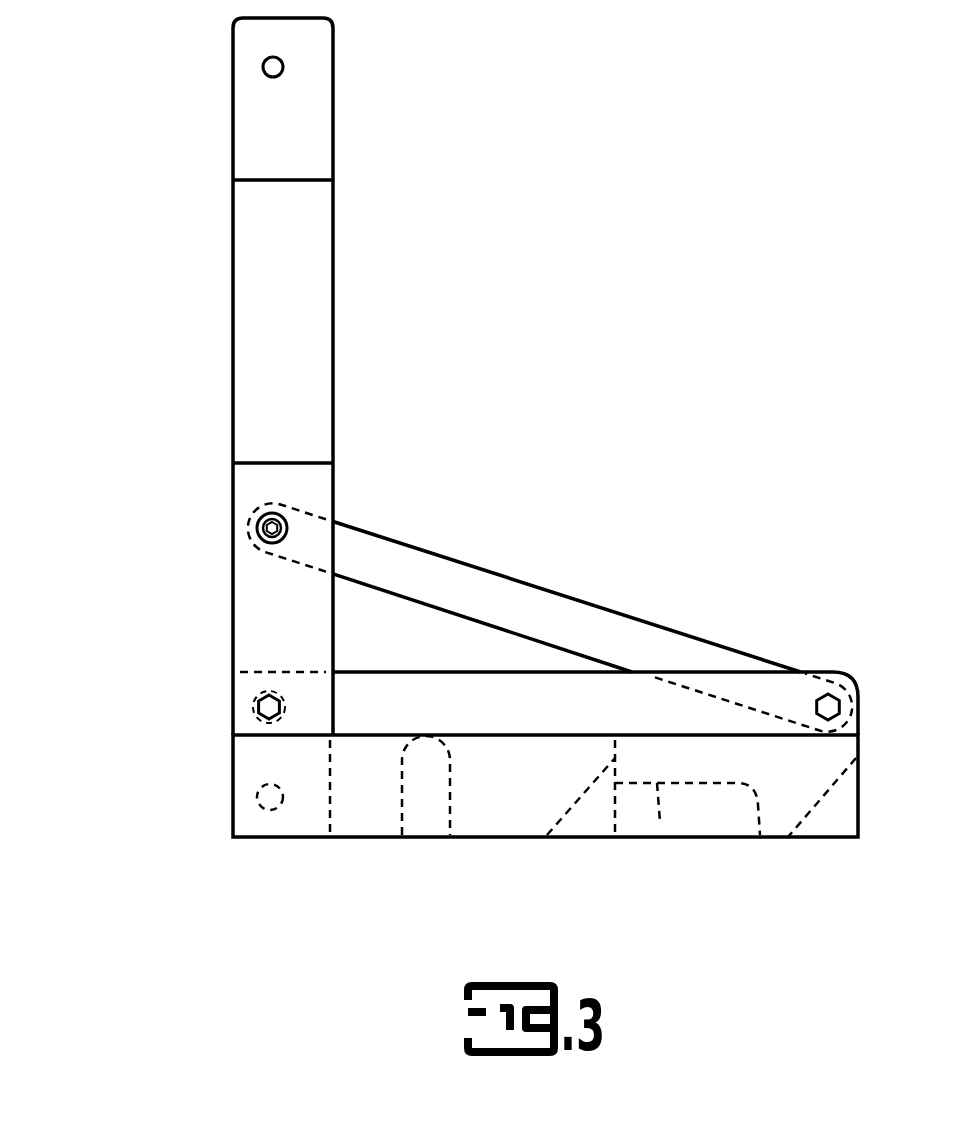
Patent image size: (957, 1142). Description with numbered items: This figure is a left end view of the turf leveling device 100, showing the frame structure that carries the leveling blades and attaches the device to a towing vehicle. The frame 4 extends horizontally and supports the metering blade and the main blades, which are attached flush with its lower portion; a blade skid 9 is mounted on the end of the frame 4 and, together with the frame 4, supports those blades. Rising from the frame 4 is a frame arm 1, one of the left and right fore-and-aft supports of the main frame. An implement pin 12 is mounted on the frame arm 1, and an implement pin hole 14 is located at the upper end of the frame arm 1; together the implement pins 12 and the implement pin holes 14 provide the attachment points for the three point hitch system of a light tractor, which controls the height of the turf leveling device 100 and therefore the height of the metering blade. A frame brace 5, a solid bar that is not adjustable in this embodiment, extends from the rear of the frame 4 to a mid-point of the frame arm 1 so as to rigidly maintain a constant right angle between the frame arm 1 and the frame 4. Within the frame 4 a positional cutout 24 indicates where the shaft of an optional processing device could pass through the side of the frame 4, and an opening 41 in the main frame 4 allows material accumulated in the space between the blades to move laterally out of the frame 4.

The turf leveling device 100 is at (122, 328).
The frame arm 1 is at (297, 137).
The implement pin hole 14 is at (263, 67).
The implement pin 12 is at (263, 522).
The frame brace 5 is at (490, 580).
The frame 4 is at (488, 700).
The blade skid 9 is at (355, 840).
The positional cutout 24 is at (420, 818).
The opening 41 is at (660, 822).